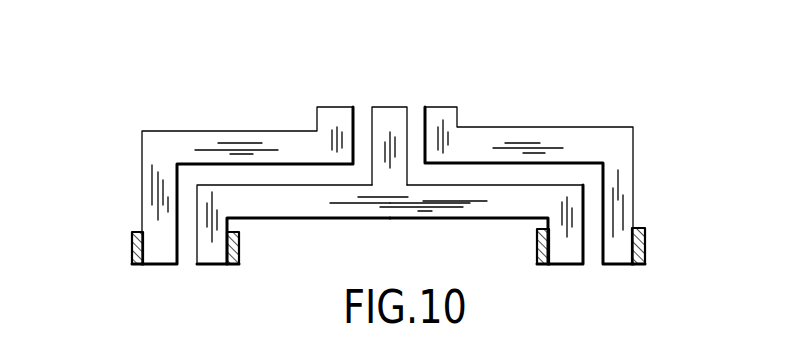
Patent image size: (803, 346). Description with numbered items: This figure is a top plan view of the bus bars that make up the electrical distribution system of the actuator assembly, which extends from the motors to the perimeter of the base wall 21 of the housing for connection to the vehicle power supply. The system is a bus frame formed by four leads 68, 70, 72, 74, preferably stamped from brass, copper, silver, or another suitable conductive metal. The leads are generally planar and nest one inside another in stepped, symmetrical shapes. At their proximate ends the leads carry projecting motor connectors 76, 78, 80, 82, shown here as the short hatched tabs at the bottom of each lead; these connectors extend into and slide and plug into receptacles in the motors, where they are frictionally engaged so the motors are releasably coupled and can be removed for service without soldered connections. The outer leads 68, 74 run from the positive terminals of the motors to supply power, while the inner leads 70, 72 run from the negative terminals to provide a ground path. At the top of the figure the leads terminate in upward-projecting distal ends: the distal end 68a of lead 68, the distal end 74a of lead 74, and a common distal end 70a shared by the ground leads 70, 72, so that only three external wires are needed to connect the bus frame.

The base wall 21 is at (513, 0).
The lead 68 is at (622, 188).
The distal end of lead 68 68a is at (448, 118).
The lead 70 is at (530, 200).
The common distal end of leads 70, 72 70a is at (388, 120).
The lead 72 is at (280, 200).
The lead 74 is at (160, 185).
The distal end of lead 74 74a is at (338, 118).
The motor connector 76 is at (643, 237).
The motor connector 78 is at (540, 264).
The motor connector 80 is at (232, 264).
The motor connector 82 is at (137, 264).